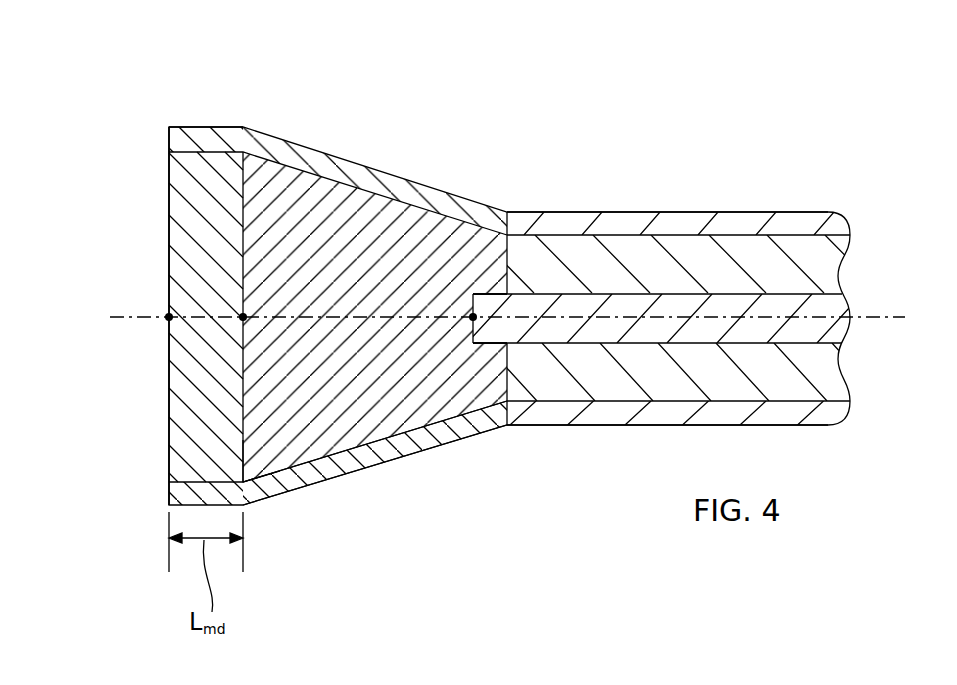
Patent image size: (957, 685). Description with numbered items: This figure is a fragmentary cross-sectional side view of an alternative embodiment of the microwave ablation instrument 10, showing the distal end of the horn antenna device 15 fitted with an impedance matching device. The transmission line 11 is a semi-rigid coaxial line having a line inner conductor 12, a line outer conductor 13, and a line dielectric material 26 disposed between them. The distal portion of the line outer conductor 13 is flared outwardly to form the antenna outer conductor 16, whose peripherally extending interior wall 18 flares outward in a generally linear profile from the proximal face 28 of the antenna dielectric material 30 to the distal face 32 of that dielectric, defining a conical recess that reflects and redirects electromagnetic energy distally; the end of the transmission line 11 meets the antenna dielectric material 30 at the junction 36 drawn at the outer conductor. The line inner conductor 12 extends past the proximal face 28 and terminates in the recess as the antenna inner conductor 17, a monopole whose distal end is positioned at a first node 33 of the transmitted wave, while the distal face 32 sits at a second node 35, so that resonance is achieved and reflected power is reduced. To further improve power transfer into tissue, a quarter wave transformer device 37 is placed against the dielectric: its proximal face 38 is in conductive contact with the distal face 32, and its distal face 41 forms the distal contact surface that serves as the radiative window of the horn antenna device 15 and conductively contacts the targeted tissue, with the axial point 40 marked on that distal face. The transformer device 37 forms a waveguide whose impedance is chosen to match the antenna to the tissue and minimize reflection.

The microwave ablation instrument 10 is at (627, 113).
The transmission line 11 is at (645, 438).
The line inner conductor 12 is at (805, 217).
The line outer conductor 13 is at (847, 300).
The horn antenna device 15 is at (382, 478).
The antenna outer conductor 16 is at (309, 162).
The antenna inner conductor 17 is at (475, 292).
The interior wall 18 is at (350, 443).
The line dielectric material 26 is at (690, 255).
The proximal face of the antenna dielectric material 28 is at (507, 252).
The antenna dielectric material 30 is at (368, 225).
The distal face of the antenna dielectric material 32 is at (243, 243).
The first node 33 is at (473, 318).
The second node 35 is at (243, 317).
The abutment of tube end 36 is at (507, 390).
The quarter wave transformer device 37 is at (204, 112).
The proximal face of the quarter wave transformer 38 is at (245, 452).
The distal-most point 40 is at (169, 317).
The distal face of the matching device 41 is at (168, 437).